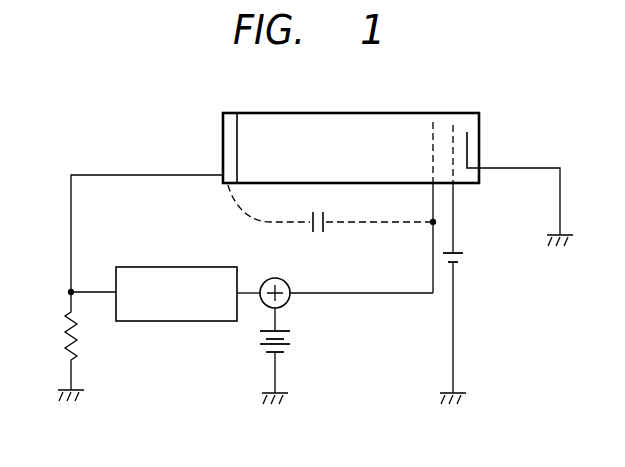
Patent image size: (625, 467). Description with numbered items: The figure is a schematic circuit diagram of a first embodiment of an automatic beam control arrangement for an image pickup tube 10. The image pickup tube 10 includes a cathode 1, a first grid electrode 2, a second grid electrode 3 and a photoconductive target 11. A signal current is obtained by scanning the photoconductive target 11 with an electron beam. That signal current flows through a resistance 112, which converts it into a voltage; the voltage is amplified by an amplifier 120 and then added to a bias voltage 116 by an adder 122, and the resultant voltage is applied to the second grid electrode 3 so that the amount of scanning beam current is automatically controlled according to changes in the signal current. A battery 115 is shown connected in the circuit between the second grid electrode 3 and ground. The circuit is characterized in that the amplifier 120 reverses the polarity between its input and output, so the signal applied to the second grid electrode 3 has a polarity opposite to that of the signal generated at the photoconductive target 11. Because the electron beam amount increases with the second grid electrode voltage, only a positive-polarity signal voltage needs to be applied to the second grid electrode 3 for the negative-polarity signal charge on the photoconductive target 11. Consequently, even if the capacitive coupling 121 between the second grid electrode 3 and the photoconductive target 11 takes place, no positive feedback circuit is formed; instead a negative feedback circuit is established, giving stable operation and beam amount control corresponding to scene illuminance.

The cathode 1 is at (467, 145).
The first grid electrode 2 is at (453, 125).
The second grid electrode 3 is at (433, 122).
The image pickup tube 10 is at (337, 113).
The photoconductive target 11 is at (223, 137).
The resistance 112 is at (65, 343).
The battery 115 is at (463, 258).
The bias voltage 116 is at (290, 337).
The amplifier 120 is at (193, 321).
The capacitive coupling 121 is at (323, 228).
The adder 122 is at (288, 302).